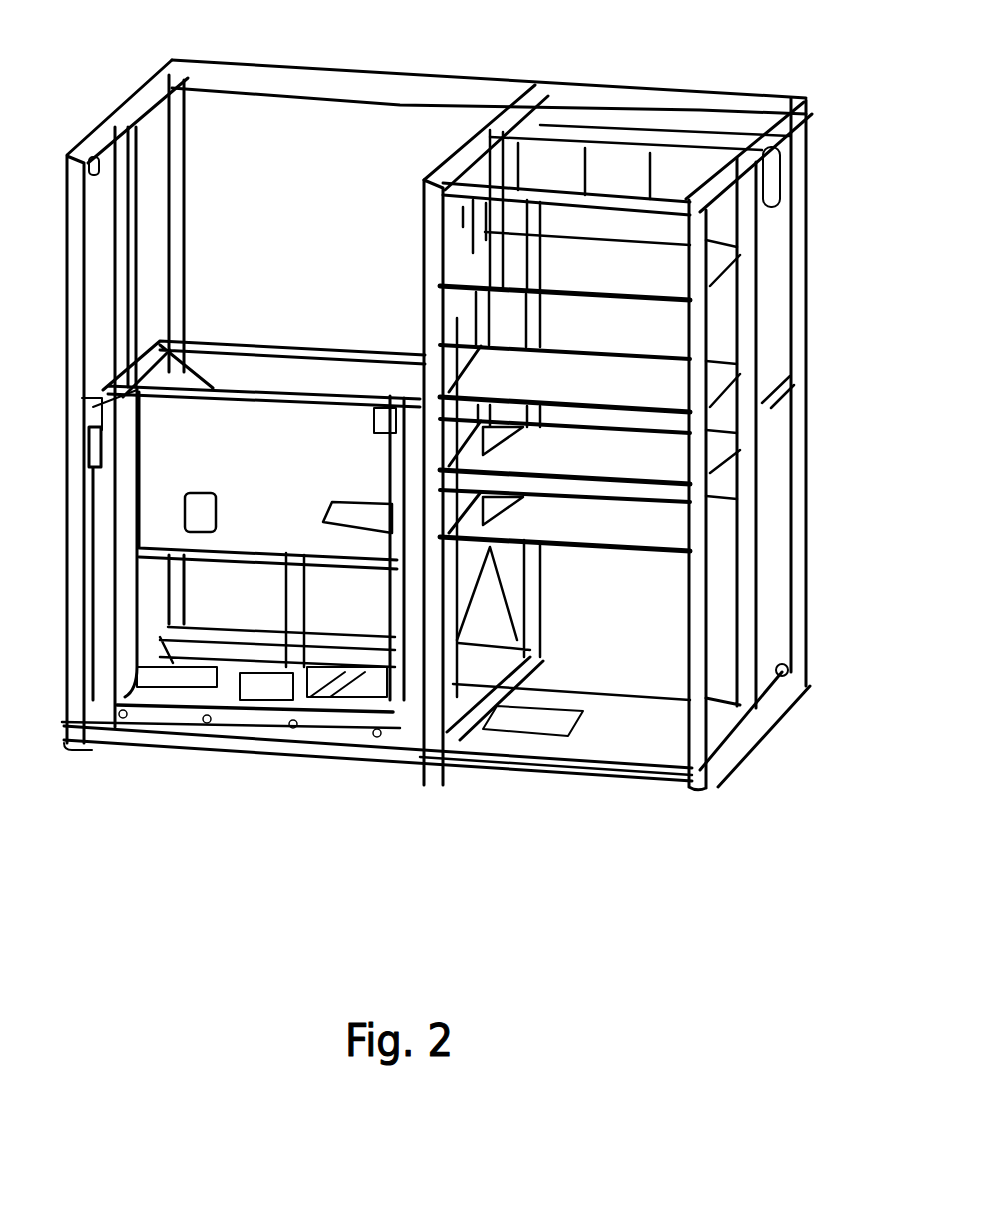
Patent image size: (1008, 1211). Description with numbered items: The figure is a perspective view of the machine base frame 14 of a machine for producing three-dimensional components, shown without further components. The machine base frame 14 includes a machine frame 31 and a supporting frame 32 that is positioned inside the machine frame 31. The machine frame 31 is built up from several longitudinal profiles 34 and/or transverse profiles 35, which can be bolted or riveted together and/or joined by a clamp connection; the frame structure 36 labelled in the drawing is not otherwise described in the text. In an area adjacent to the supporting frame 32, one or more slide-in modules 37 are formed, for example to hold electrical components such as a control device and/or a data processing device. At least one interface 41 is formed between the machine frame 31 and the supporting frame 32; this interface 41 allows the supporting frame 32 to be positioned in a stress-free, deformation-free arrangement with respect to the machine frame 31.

The machine base frame 14 is at (422, 860).
The machine frame 31 is at (545, 802).
The supporting frame 32 is at (245, 763).
The longitudinal profiles 34 is at (65, 250).
The transverse profiles 35 is at (117, 107).
The frame 36 is at (806, 639).
The slide-in modules 37 is at (717, 323).
The interface 41 is at (85, 427).